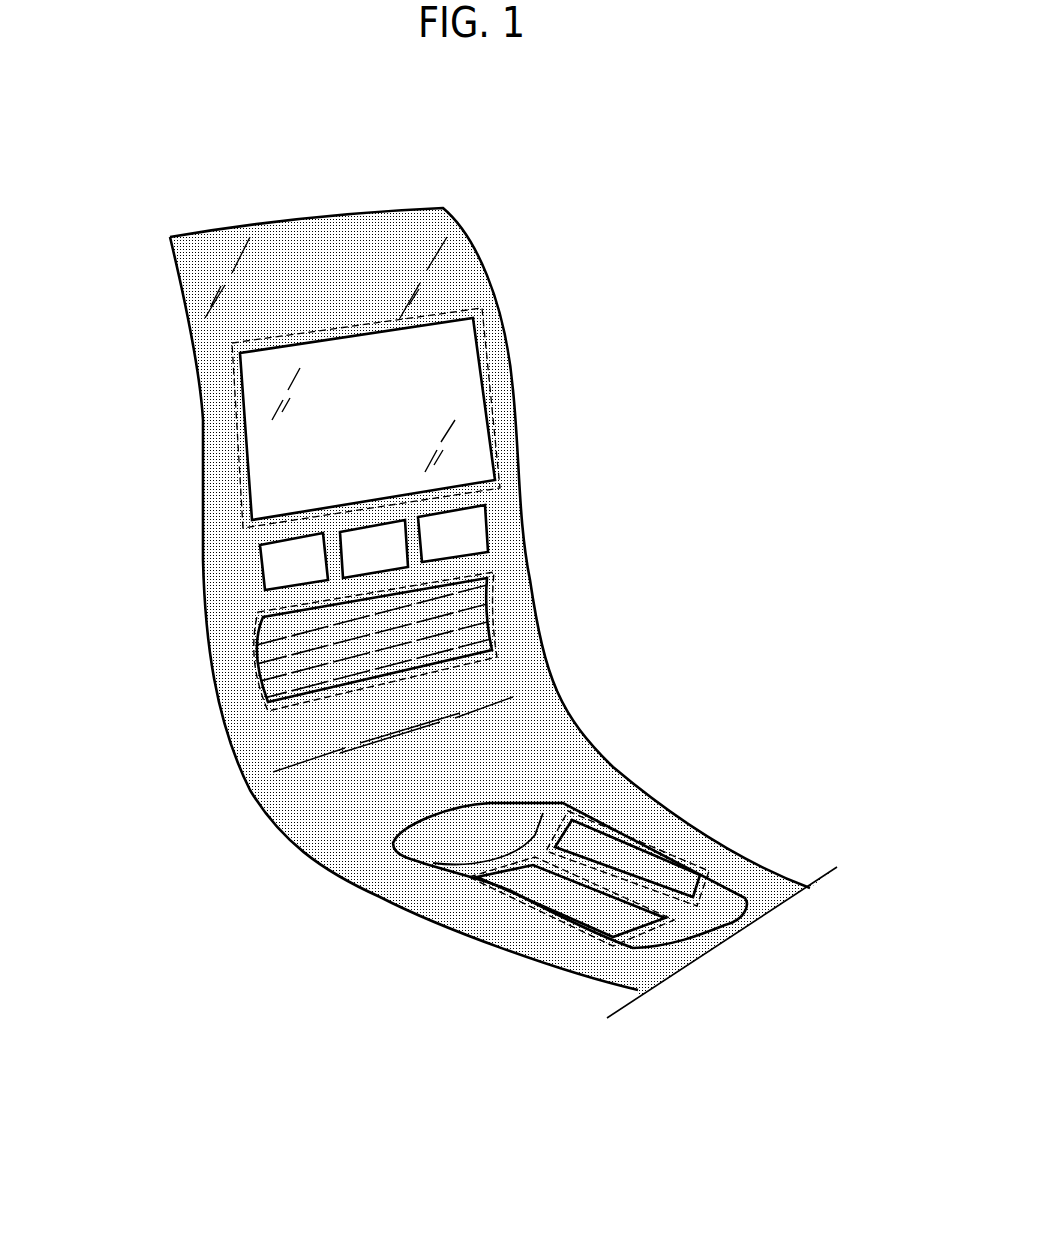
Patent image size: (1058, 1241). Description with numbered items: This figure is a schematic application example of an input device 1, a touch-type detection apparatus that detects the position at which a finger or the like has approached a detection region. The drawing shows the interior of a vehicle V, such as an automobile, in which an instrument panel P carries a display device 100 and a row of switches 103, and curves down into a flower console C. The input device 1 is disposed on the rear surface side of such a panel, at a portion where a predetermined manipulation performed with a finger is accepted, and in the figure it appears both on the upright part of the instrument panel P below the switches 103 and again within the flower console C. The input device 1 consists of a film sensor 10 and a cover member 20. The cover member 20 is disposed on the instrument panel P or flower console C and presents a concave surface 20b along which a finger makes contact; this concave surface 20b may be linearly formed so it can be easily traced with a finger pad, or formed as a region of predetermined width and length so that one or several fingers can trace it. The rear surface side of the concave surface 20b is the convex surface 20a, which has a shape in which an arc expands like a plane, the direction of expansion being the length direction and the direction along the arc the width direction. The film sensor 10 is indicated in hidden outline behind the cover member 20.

The vehicle V is at (560, 137).
The instrument panel P is at (493, 262).
The flower console C is at (613, 767).
The display device 100 is at (470, 387).
The switches 103 is at (470, 526).
The input device 1 is at (500, 588).
The film sensor 10 is at (497, 598).
The cover member 20 is at (493, 630).
The convex surface 20a is at (248, 648).
The concave surface 20b is at (262, 693).